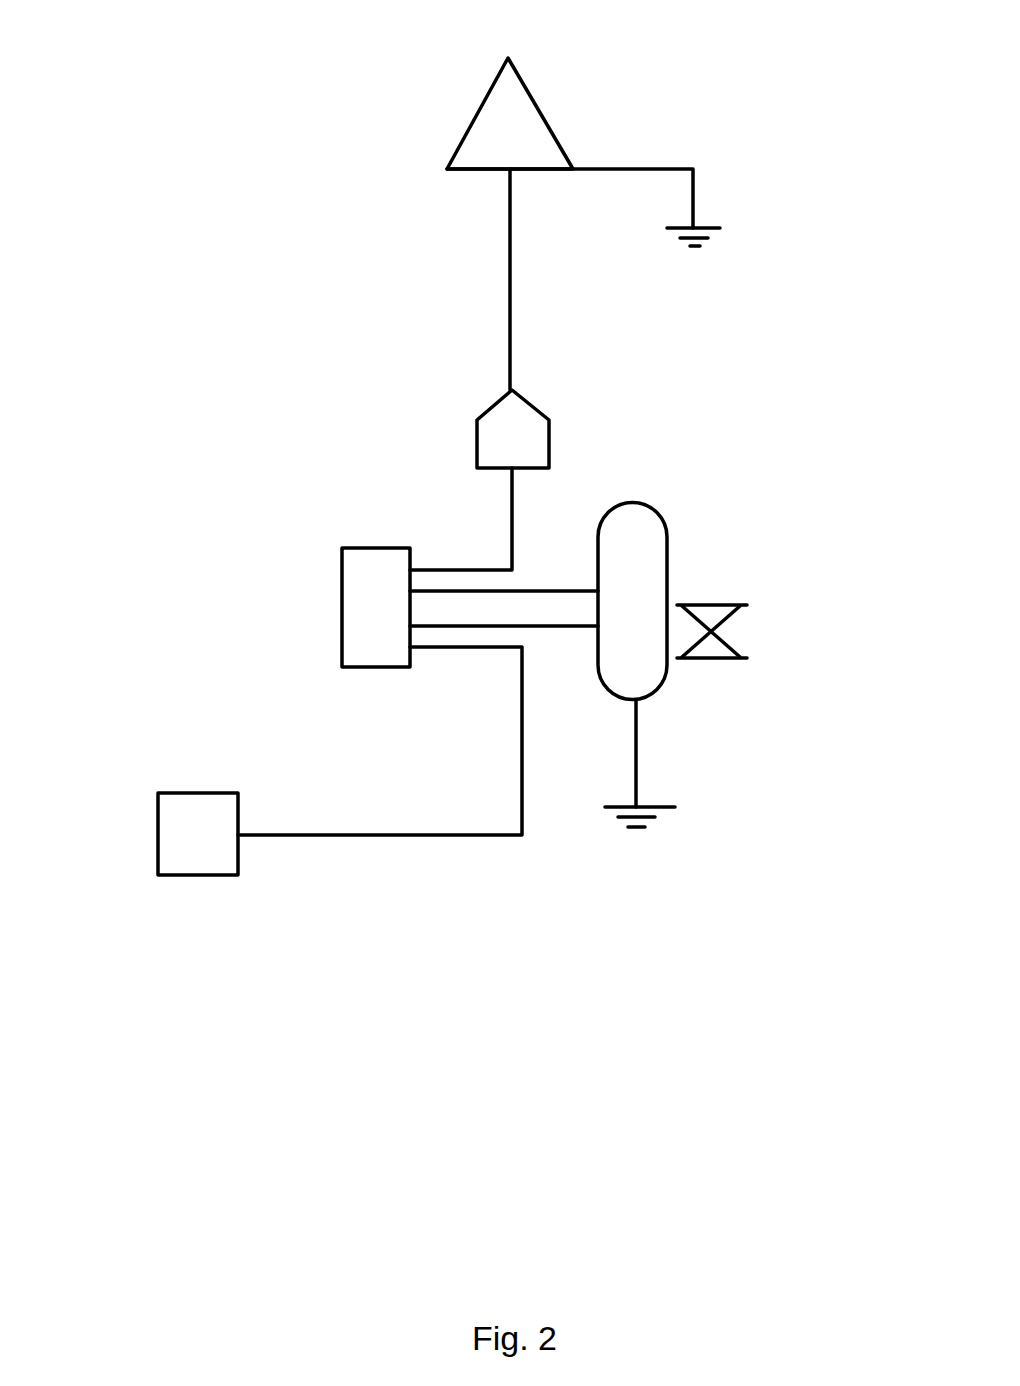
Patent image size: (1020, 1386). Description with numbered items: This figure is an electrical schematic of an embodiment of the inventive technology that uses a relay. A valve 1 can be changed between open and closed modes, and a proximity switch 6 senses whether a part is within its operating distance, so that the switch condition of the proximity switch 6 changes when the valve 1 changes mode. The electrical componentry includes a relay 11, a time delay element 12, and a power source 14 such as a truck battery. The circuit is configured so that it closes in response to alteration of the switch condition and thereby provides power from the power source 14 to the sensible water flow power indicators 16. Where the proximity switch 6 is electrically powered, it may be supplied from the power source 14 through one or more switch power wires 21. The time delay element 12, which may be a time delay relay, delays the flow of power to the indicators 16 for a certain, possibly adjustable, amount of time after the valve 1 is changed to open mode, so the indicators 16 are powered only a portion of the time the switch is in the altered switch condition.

The valve 1 is at (733, 598).
The proximity switch 6 is at (667, 548).
The relay 11 is at (342, 610).
The time delay element 12 is at (549, 437).
The power source 14 is at (173, 875).
The sensible water flow power indicators 16 is at (540, 110).
The switch power wires 21 is at (545, 628).